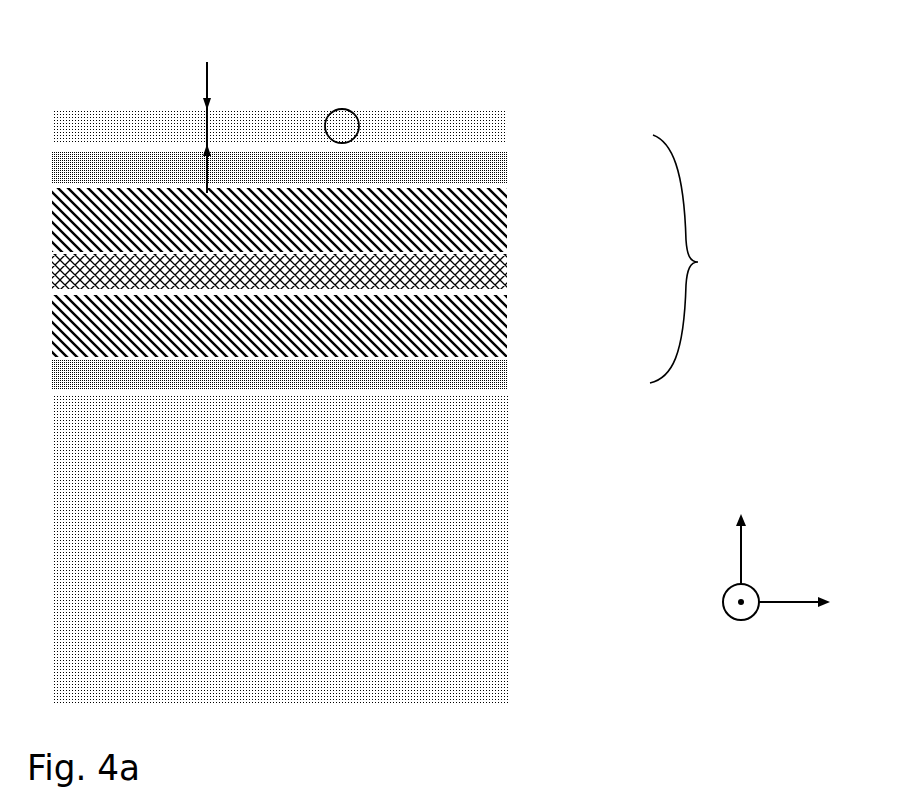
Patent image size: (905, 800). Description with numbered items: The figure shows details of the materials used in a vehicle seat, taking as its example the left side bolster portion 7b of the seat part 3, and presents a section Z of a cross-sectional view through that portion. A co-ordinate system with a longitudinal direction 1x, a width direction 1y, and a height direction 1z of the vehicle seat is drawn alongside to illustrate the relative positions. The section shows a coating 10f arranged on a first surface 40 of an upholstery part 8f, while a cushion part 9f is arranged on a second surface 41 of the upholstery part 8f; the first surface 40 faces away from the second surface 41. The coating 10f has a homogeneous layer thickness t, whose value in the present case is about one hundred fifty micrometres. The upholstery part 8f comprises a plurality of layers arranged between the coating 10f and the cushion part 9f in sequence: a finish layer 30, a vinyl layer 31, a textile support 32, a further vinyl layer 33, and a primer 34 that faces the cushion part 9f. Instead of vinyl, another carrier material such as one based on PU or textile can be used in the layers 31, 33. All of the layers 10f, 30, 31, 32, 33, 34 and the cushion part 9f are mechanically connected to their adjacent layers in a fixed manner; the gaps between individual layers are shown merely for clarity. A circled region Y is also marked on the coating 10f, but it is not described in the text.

The seat part 3 is at (319, 73).
The left side bolster portion 7b is at (718, 171).
The upholstery part 8f is at (690, 259).
The cushion part 9f is at (479, 531).
The coating 10f is at (472, 130).
The finish layer 30 is at (473, 165).
The vinyl layer 31 is at (473, 220).
The textile support 32 is at (473, 269).
The vinyl layer 33 is at (473, 324).
The primer 34 is at (473, 375).
The first surface 40 is at (95, 138).
The second surface 41 is at (87, 401).
The section Z is at (201, 103).
The layer thickness t is at (208, 128).
The reference point Y is at (353, 111).
The longitudinal direction 1x is at (790, 607).
The width direction 1y is at (722, 605).
The height direction 1z is at (741, 550).